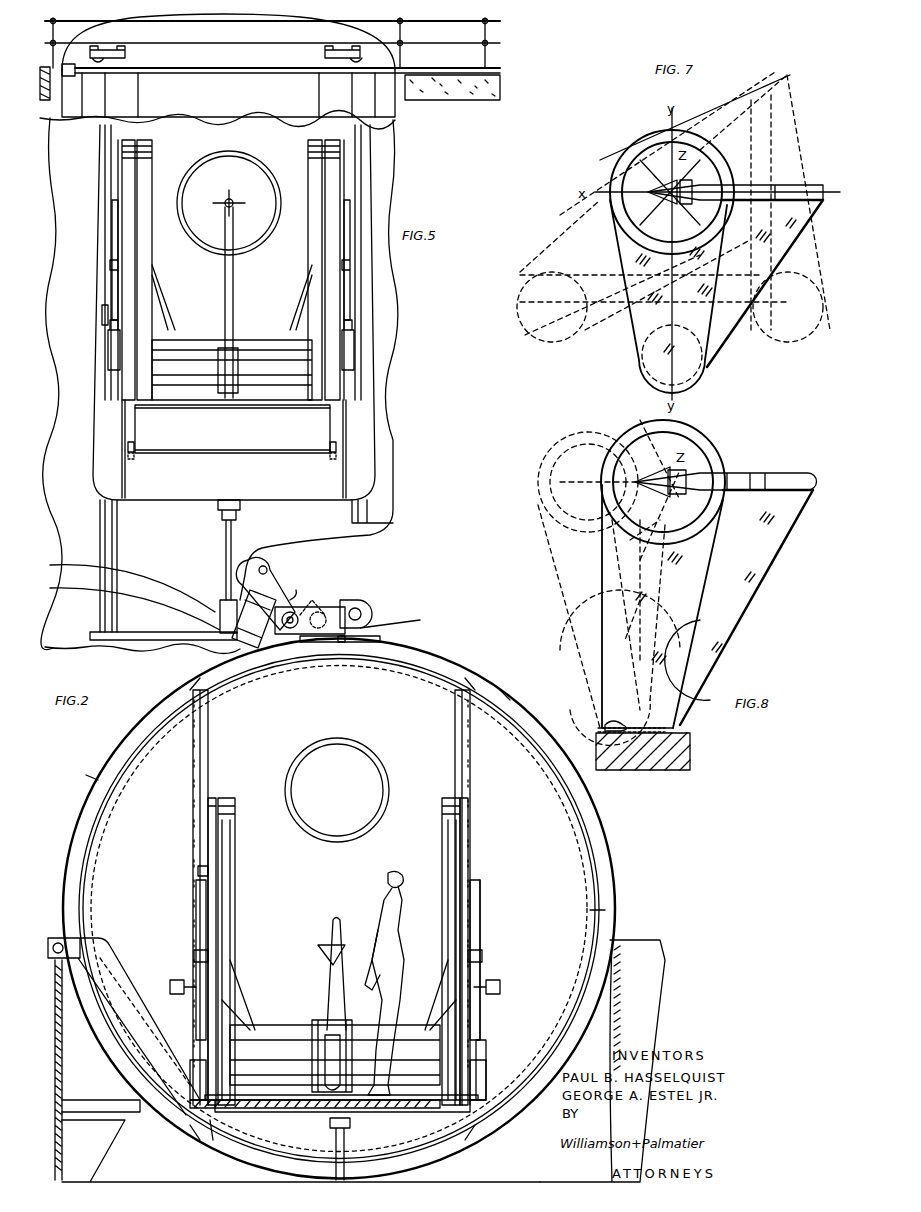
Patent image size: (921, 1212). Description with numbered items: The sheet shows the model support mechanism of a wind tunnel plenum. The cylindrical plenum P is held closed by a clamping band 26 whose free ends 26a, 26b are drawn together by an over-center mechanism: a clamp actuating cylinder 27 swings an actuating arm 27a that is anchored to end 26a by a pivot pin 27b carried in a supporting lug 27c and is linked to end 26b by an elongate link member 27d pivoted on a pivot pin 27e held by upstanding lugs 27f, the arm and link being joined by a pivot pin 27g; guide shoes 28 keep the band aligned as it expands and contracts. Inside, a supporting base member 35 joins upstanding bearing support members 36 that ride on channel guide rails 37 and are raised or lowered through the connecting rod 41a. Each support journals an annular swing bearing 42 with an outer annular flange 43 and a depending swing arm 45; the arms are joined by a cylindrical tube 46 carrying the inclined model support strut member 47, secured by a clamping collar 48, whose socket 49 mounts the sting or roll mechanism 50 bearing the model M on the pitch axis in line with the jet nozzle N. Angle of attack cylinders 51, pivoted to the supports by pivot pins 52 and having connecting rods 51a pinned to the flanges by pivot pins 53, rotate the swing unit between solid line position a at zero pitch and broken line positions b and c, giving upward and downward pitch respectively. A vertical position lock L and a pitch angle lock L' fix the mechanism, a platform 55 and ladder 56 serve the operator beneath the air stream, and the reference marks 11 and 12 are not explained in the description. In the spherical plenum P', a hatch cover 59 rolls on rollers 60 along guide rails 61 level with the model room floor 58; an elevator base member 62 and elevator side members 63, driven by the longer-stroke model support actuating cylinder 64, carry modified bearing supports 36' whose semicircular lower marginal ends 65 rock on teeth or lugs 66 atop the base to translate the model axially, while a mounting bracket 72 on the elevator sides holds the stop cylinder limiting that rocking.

In FIG. 5, the cab / housing 11 is at (202, 92).
In FIG. 2, the section line 12 is at (176, 867).
In FIG. 2, the clamping band 26 is at (430, 644).
In FIG. 2, the free end of clamping band 26a is at (320, 648).
In FIG. 2, the free end of clamping band 26b is at (360, 642).
In FIG. 2, the clamp actuating cylinder 27 is at (254, 619).
In FIG. 2, the actuating arm 27a is at (283, 563).
In FIG. 2, the pivot pin 27b is at (318, 603).
In FIG. 2, the supporting lug 27c is at (330, 606).
In FIG. 2, the elongate link member 27d is at (283, 593).
In FIG. 2, the pivot pin 27e is at (360, 610).
In FIG. 2, the upstanding lugs 27f is at (399, 616).
In FIG. 2, the pivot pin 27g is at (286, 632).
In FIG. 2, the guide shoes 28 is at (98, 772).
In FIG. 5, the supporting base member 35 is at (270, 440).
In FIG. 2, the supporting base member 35 is at (280, 1111).
In FIG. 2, the bearing support members 36 is at (496, 990).
In FIG. 8, the bearing support members 36 is at (631, 574).
In FIG. 5, the bearing supports 36' is at (204, 449).
In FIG. 8, the bearing supports 36' is at (591, 588).
In FIG. 5, the guide rails 37 is at (100, 540).
In FIG. 2, the guide rails 37 is at (193, 753).
In FIG. 2, the connecting rod 41a is at (344, 1168).
In FIG. 2, the swing bearing 42 is at (228, 832).
In FIG. 5, the annular flange 43 is at (118, 157).
In FIG. 2, the annular flange 43 is at (208, 834).
In FIG. 5, the swing arm 45 is at (145, 152).
In FIG. 2, the swing arm 45 is at (226, 898).
In FIG. 7, the swing arm 45 is at (610, 228).
In FIG. 8, the swing arm 45 is at (710, 648).
In FIG. 5, the cylindrical tube 46 is at (214, 336).
In FIG. 2, the cylindrical tube 46 is at (278, 1024).
In FIG. 5, the model support strut member 47 is at (233, 275).
In FIG. 7, the model support strut member 47 is at (718, 355).
In FIG. 8, the model support strut member 47 is at (762, 559).
In FIG. 2, the clamping collar 48 is at (316, 1024).
In FIG. 2, the socket 49 is at (334, 1062).
In FIG. 2, the sting or roll mechanism 50 is at (333, 990).
In FIG. 7, the sting or roll mechanism 50 is at (752, 190).
In FIG. 8, the sting or roll mechanism 50 is at (726, 481).
In FIG. 2, the angle of attack cylinders 51 is at (190, 1003).
In FIG. 5, the connecting rod 51a is at (112, 245).
In FIG. 2, the connecting rod 51a is at (196, 923).
In FIG. 5, the pivot pin 52 is at (98, 316).
In FIG. 2, the pivot pin 53 is at (196, 874).
In FIG. 2, the platform 55 is at (292, 1096).
In FIG. 2, the ladder 56 is at (123, 946).
In FIG. 5, the floor of the model room 58 is at (456, 100).
In FIG. 5, the hatch cover 59 is at (405, 33).
In FIG. 5, the rollers 60 is at (125, 50).
In FIG. 5, the guide rails 61 is at (226, 66).
In FIG. 5, the supporting base member 62 is at (208, 495).
In FIG. 8, the supporting base member 62 is at (680, 770).
In FIG. 5, the elevator side members 63 is at (93, 442).
In FIG. 5, the model support actuating cylinder 64 is at (216, 614).
In FIG. 5, the lower marginal ends 65 is at (136, 458).
In FIG. 8, the lower marginal ends 65 is at (602, 726).
In FIG. 5, the teeth or lugs 66 is at (136, 446).
In FIG. 8, the teeth or lugs 66 is at (642, 705).
In FIG. 5, the mounting bracket 72 is at (112, 290).
In FIG. 5, the model M is at (233, 200).
In FIG. 2, the model M is at (333, 930).
In FIG. 7, the model M is at (668, 212).
In FIG. 8, the model M is at (660, 490).
In FIG. 5, the jet nozzle N is at (276, 175).
In FIG. 2, the jet nozzle N is at (348, 741).
In FIG. 2, the plenum P is at (504, 640).
In FIG. 5, the plenum P' is at (233, 381).
In FIG. 2, the vertical position lock L is at (170, 989).
In FIG. 2, the pitch angle lock L' is at (500, 975).
In FIG. 7, the solid line position a is at (636, 386).
In FIG. 7, the broken line position b is at (530, 356).
In FIG. 7, the broken line position c is at (778, 352).